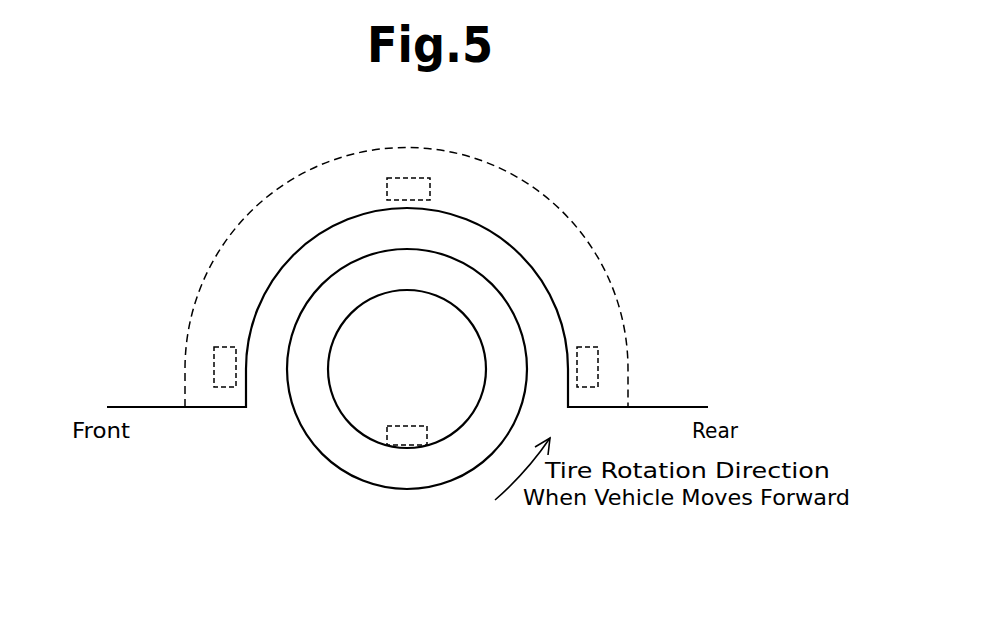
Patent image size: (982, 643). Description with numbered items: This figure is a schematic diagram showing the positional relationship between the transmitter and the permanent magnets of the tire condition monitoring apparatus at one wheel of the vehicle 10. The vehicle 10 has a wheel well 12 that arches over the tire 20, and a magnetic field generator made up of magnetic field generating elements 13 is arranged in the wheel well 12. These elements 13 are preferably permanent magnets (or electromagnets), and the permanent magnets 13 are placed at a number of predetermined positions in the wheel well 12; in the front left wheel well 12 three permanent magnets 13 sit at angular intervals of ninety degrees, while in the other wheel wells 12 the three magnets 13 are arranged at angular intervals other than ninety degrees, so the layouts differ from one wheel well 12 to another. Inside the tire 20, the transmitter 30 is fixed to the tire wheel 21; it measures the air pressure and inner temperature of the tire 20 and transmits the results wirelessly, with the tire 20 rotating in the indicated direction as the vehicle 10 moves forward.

The vehicle 10 is at (152, 408).
The wheel well 12 is at (547, 196).
The permanent magnet 13 is at (430, 188).
The tire 20 is at (405, 489).
The tire wheel 21 is at (443, 298).
The transmitter 30 is at (407, 426).